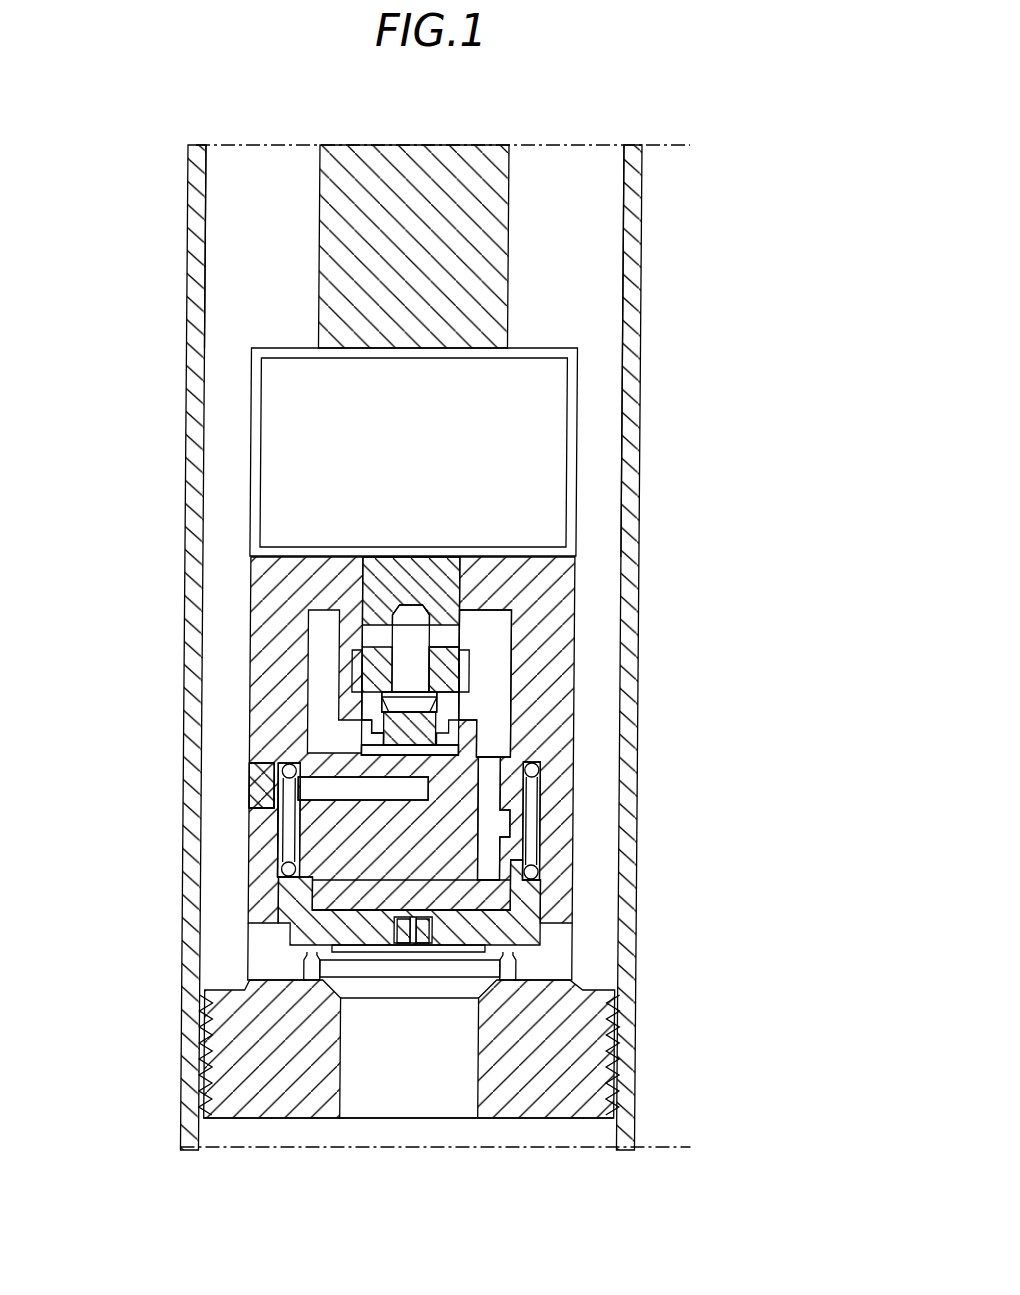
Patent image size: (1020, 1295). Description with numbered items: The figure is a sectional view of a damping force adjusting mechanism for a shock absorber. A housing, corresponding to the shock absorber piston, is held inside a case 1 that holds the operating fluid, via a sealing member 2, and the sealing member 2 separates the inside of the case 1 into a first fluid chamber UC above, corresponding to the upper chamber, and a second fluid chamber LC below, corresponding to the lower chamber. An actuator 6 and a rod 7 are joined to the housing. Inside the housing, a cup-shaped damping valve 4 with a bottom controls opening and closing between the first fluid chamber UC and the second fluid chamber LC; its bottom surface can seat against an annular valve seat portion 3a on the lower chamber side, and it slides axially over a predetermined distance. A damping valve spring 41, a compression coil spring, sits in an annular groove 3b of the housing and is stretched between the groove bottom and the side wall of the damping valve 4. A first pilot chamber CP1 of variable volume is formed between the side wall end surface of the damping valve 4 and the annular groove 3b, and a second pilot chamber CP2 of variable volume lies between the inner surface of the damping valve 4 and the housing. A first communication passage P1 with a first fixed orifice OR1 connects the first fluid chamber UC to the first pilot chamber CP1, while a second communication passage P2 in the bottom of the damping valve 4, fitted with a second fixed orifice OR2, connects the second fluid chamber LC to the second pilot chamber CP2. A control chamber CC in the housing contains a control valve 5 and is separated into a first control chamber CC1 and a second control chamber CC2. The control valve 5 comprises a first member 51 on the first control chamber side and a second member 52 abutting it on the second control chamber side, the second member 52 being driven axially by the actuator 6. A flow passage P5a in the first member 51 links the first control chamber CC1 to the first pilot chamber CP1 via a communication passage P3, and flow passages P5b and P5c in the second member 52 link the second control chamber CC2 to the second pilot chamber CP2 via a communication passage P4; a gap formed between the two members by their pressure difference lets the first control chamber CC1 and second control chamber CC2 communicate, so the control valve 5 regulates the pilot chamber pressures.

The case 1 is at (635, 200).
The rod 7 is at (485, 273).
The actuator 6 is at (557, 415).
The control valve 5 is at (466, 634).
The flow passage P5c is at (410, 652).
The flow passage P5b is at (388, 640).
The first control chamber CC1 is at (386, 698).
The first member 51 is at (428, 738).
The flow passage P5a is at (378, 728).
The communication passage P3 is at (372, 750).
The first communication passage P1 is at (320, 786).
The control chamber CC is at (497, 652).
The second member 52 is at (450, 676).
The second control chamber CC2 is at (445, 700).
The first fixed orifice OR1 is at (262, 785).
The damping valve spring 41 is at (285, 856).
The first pilot chamber CP1 is at (305, 822).
The communication passage P4 is at (498, 797).
The annular groove 3b is at (532, 830).
The second pilot chamber CP2 is at (500, 892).
The damping valve 4 is at (292, 934).
The second fixed orifice OR2 is at (430, 948).
The second communication passage P2 is at (420, 906).
The valve seat portion 3a is at (513, 975).
The sealing member 2 is at (628, 1100).
The first fluid chamber UC is at (205, 222).
The second fluid chamber LC is at (220, 1140).